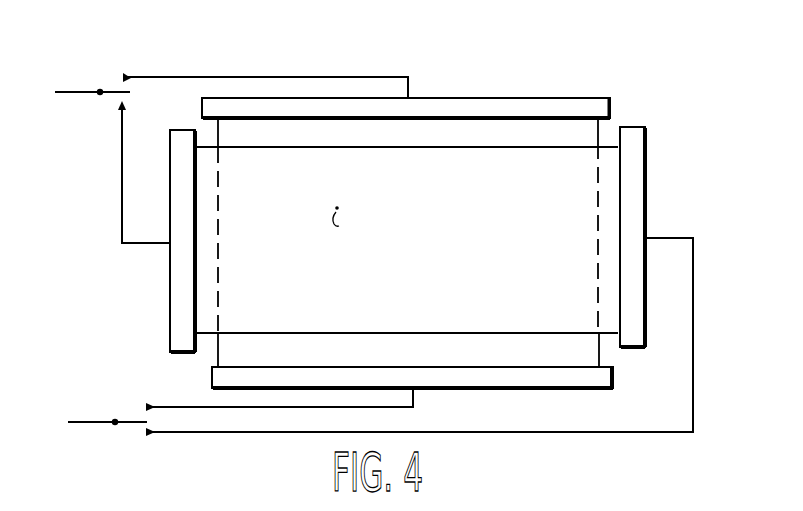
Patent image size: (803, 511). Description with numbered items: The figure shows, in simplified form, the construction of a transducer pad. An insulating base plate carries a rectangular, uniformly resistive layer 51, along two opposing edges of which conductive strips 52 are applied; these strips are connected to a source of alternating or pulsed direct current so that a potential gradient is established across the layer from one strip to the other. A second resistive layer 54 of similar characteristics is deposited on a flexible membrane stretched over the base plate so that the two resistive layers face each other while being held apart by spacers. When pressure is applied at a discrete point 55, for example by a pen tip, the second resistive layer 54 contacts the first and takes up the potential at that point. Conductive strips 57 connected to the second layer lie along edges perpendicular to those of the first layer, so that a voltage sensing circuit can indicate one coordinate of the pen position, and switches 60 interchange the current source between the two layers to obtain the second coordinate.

The resistive layer 51 is at (580, 133).
The conductive strips 52 is at (525, 108).
The second resistive layer 54 is at (608, 177).
The discrete point 55 is at (348, 227).
The conductive strips of the second layer 57 is at (183, 278).
The switches 60 is at (118, 77).